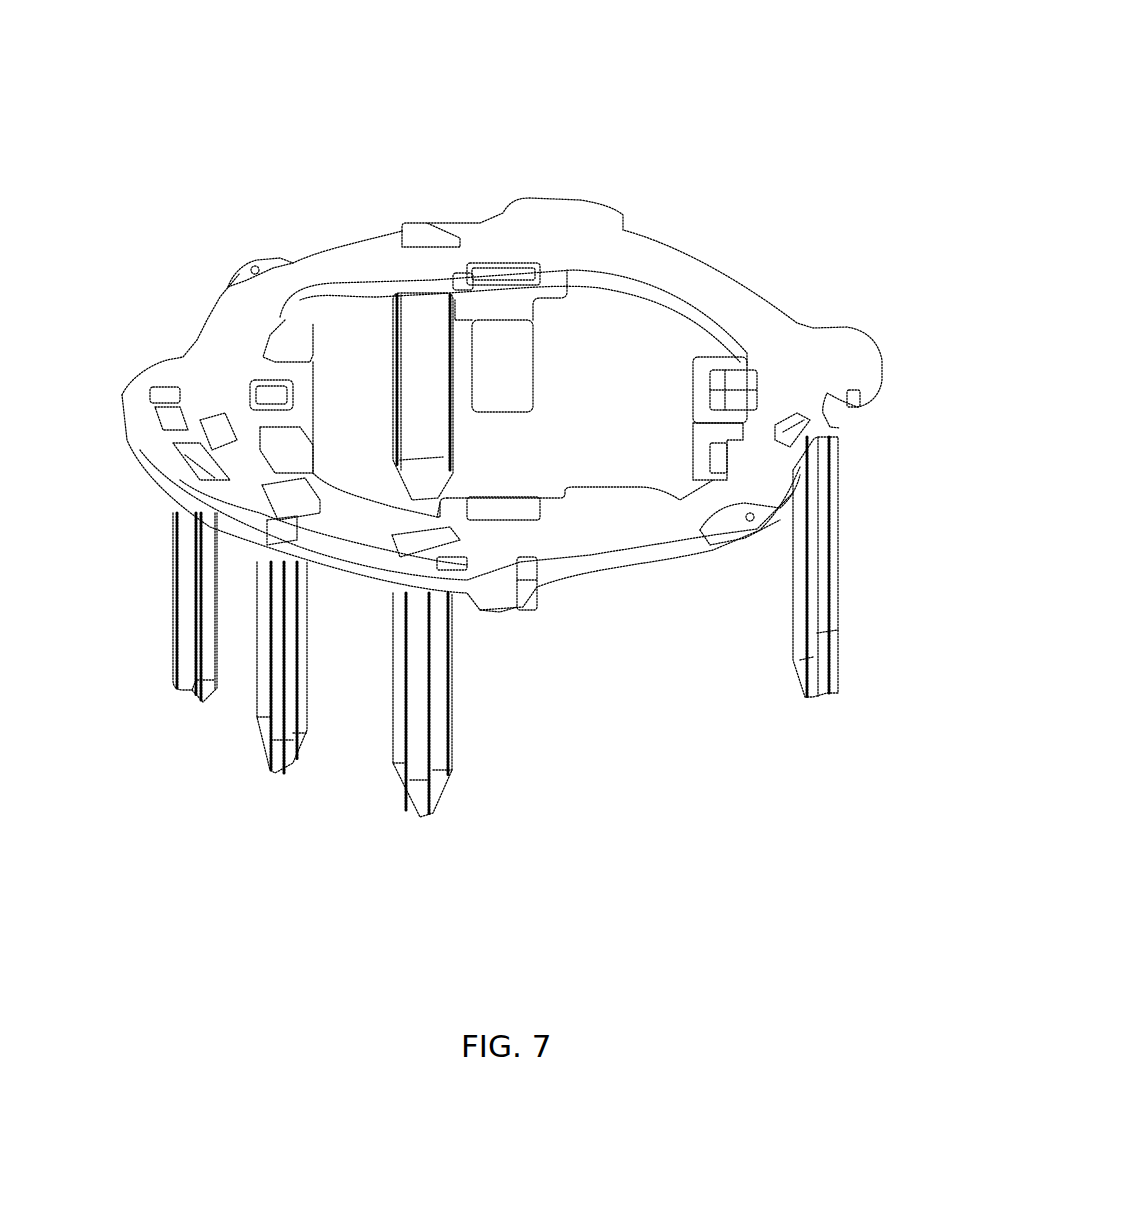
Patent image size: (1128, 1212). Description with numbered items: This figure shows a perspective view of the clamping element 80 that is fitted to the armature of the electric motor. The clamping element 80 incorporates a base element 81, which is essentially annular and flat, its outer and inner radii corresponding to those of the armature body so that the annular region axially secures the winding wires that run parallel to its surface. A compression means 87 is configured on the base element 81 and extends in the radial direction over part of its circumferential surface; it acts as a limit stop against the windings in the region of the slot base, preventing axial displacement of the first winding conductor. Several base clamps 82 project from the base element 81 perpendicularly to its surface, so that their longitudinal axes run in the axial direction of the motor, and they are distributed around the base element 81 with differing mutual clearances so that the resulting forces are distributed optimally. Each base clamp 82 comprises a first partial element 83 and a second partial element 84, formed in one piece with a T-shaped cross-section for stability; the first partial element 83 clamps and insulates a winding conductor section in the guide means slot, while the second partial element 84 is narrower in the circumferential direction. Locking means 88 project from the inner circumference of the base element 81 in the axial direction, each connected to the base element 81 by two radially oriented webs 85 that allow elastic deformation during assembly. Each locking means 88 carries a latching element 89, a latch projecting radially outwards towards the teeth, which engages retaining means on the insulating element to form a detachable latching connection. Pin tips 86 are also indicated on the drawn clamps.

The clamping element 80 is at (668, 97).
The base element 81 is at (233, 337).
The base clamp 82 is at (240, 642).
The first partial element 83 is at (437, 417).
The second partial element 84 is at (825, 487).
The web 85 is at (557, 272).
The pin tips 86 is at (208, 728).
The compression means 87 is at (410, 577).
The locking means 88 is at (500, 347).
The latching element 89 is at (522, 607).